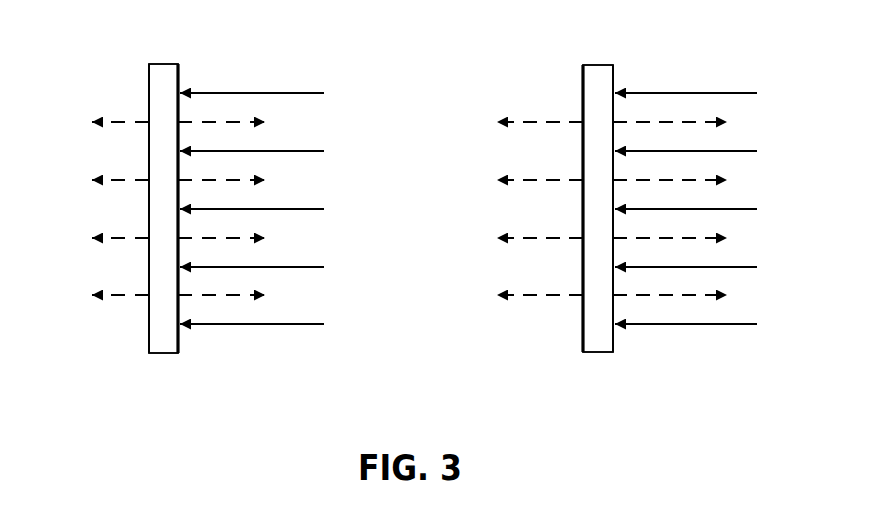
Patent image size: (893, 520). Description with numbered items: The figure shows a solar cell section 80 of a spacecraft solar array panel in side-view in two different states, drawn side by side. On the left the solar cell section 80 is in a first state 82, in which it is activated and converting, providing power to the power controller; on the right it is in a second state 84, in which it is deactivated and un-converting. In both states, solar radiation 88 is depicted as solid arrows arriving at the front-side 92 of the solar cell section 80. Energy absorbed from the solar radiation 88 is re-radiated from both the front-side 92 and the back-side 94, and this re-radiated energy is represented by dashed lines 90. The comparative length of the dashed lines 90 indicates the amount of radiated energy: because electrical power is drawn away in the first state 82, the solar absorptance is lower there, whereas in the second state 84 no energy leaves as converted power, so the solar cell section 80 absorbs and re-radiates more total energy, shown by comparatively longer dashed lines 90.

The solar cell section 80 is at (163, 340).
The first state 82 is at (120, 50).
The second state 84 is at (553, 48).
The solar radiation 88 is at (310, 91).
The dashed lines 90 is at (77, 107).
The front-side 92 is at (179, 78).
The back-side 94 is at (150, 308).